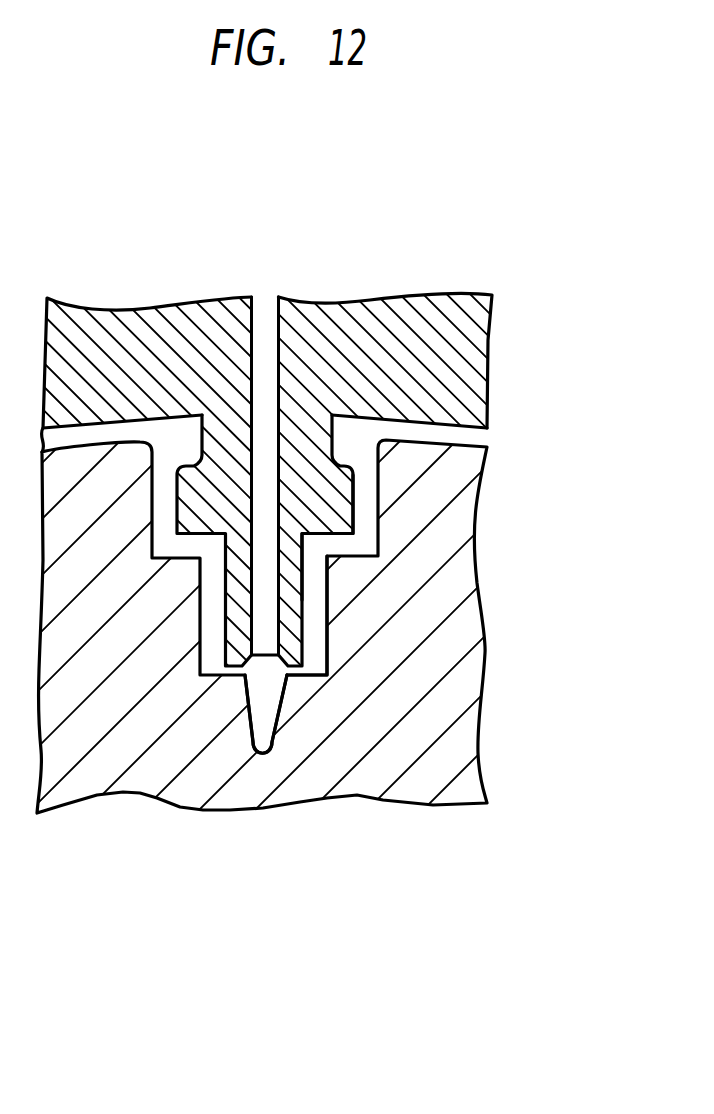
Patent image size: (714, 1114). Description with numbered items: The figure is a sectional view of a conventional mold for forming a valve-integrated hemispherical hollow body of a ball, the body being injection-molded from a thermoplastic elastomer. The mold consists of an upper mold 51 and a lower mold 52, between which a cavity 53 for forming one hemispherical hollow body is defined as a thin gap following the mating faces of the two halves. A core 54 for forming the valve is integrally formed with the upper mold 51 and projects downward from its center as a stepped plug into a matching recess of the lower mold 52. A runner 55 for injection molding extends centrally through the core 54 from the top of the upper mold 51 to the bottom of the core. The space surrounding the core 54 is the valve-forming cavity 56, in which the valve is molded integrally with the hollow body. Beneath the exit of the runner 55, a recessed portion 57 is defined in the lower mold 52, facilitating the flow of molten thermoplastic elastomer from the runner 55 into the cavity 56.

The upper mold 51 is at (489, 338).
The lower mold 52 is at (463, 518).
The cavity 53 is at (472, 438).
The core 54 is at (345, 518).
The runner 55 is at (268, 301).
The valve-forming cavity 56 is at (318, 640).
The recessed portion 57 is at (263, 745).